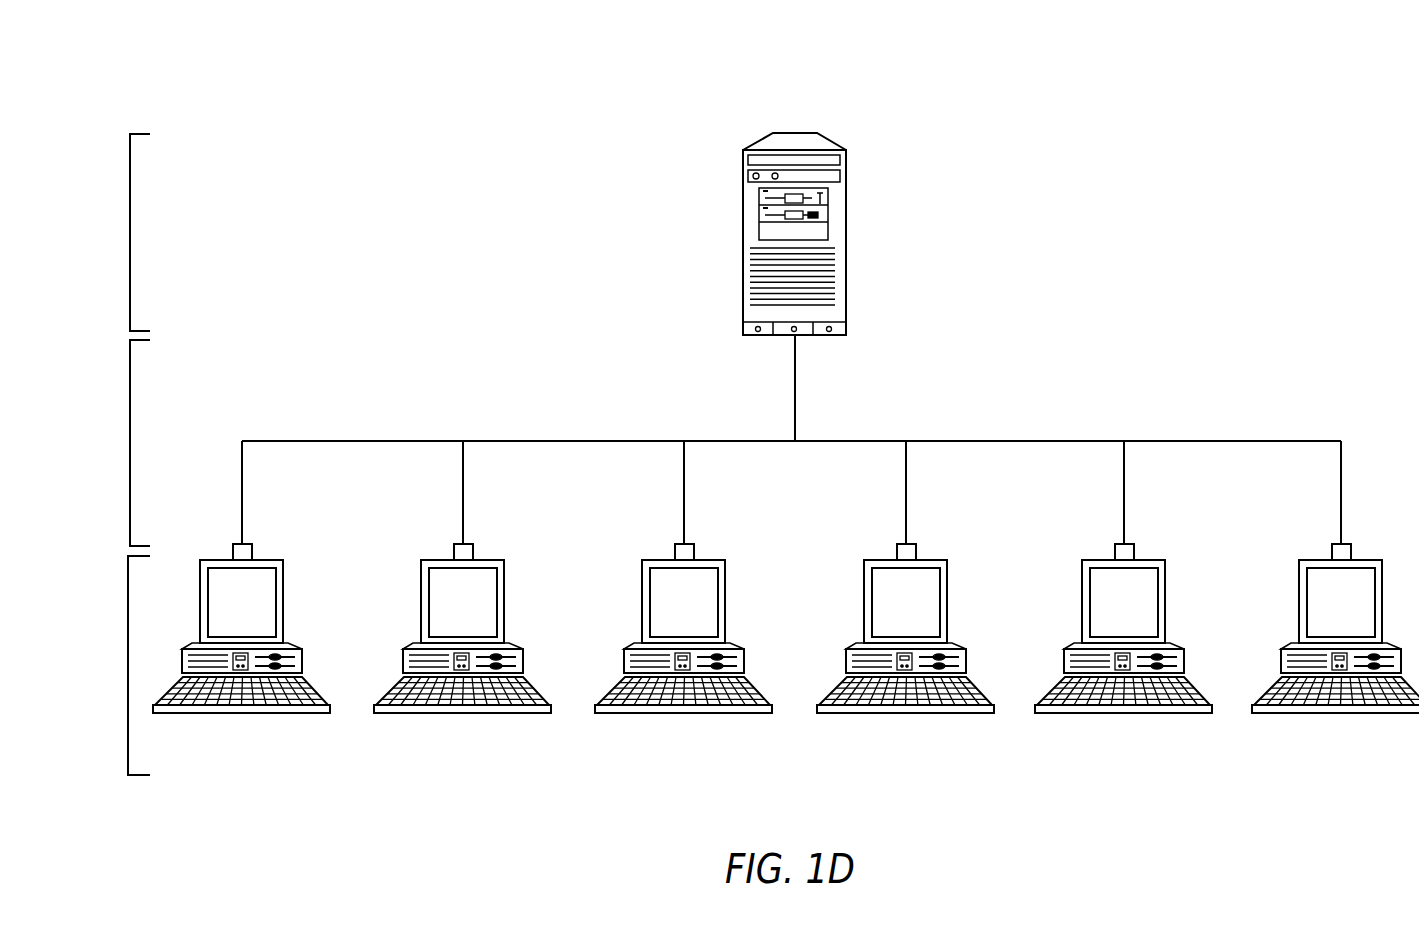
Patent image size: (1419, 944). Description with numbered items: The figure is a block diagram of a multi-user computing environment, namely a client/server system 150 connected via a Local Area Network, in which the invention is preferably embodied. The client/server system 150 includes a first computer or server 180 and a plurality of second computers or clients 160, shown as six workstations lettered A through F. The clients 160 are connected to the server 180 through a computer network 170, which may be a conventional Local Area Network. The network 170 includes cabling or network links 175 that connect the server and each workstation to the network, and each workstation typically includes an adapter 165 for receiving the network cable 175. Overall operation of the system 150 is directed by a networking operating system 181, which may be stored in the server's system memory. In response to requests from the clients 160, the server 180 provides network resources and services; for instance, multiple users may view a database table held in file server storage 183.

The client/server system 150 is at (775, 51).
The clients 160 is at (745, 631).
The adapter 165 is at (451, 527).
The computer network 170 is at (709, 443).
The network cable 175 is at (1190, 440).
The server 180 is at (539, 287).
The networking operating system 181 is at (722, 210).
The file server storage 183 is at (722, 236).